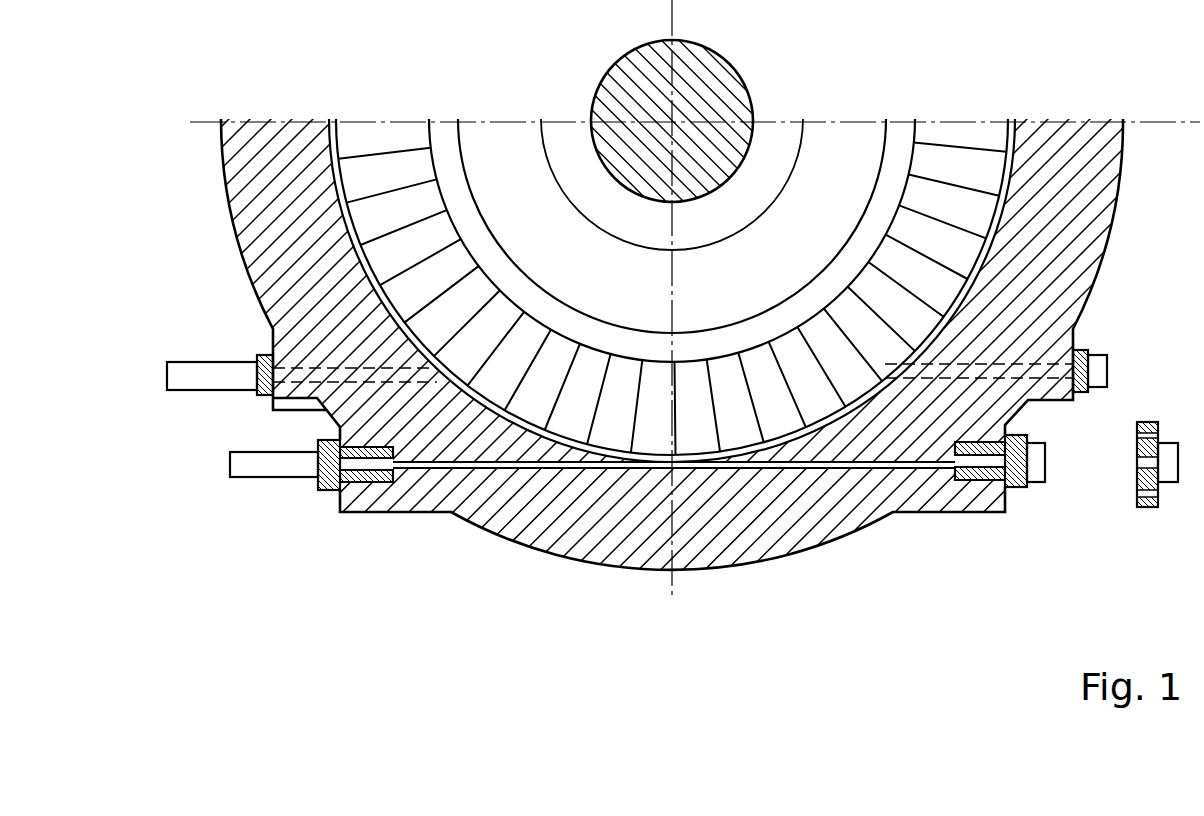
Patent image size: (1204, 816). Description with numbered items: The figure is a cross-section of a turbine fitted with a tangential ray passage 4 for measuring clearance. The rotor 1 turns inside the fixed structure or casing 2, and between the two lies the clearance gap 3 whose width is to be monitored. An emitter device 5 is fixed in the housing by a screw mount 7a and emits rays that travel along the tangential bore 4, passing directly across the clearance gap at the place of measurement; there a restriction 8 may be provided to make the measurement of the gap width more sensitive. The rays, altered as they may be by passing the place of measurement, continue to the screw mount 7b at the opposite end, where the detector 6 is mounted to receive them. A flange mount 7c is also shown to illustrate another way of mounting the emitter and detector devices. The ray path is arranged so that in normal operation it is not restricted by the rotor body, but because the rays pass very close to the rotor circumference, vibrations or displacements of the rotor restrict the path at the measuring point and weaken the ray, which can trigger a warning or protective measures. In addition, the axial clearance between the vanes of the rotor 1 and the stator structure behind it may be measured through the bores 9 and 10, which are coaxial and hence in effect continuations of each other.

The rotor 1 is at (415, 147).
The fixed structure or casing 2 is at (258, 150).
The clearance gap 3 is at (328, 128).
The tangential ray passage 4 is at (545, 462).
The emitter device 5 is at (280, 470).
The detector 6 is at (1035, 463).
The screw mount 7a is at (335, 492).
The screw mount 7b is at (1020, 488).
The flange mount 7c is at (1152, 508).
The restriction 8 is at (672, 466).
The bore 9 is at (362, 383).
The bore 10 is at (998, 378).